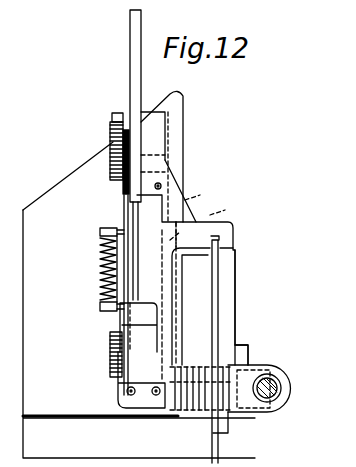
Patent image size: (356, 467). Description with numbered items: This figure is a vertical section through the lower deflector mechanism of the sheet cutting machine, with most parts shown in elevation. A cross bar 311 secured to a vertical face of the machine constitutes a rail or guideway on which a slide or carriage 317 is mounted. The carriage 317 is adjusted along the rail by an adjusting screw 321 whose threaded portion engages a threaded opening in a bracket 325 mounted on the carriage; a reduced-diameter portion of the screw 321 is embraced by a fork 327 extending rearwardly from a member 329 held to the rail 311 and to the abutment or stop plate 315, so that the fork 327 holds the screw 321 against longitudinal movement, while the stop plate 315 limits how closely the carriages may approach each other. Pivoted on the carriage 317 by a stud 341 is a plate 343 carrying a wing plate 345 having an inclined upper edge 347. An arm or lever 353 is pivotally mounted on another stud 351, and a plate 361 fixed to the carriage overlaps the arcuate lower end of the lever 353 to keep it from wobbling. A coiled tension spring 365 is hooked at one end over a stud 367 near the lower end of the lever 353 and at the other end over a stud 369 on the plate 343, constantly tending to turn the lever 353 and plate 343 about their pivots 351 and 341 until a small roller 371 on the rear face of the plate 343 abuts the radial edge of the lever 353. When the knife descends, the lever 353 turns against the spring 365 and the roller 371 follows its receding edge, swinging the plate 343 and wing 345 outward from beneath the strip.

The arm 353 is at (131, 50).
The stud 351 is at (113, 116).
The inclined upper edge 347 is at (92, 157).
The plate 343 is at (122, 184).
The plate 361 is at (122, 198).
The stud 367 is at (104, 228).
The coiled tension spring 365 is at (100, 260).
The stud 369 is at (100, 307).
The stud 341 is at (110, 340).
The wing plate 345 is at (23, 210).
The roller 371 is at (188, 198).
The carriage 317 is at (198, 228).
The cross bar 311 is at (237, 268).
The abutment plate 315 is at (210, 300).
The member 329 is at (252, 345).
The bracket 325 is at (248, 352).
The adjusting screw 321 is at (272, 380).
The fork 327 is at (264, 420).